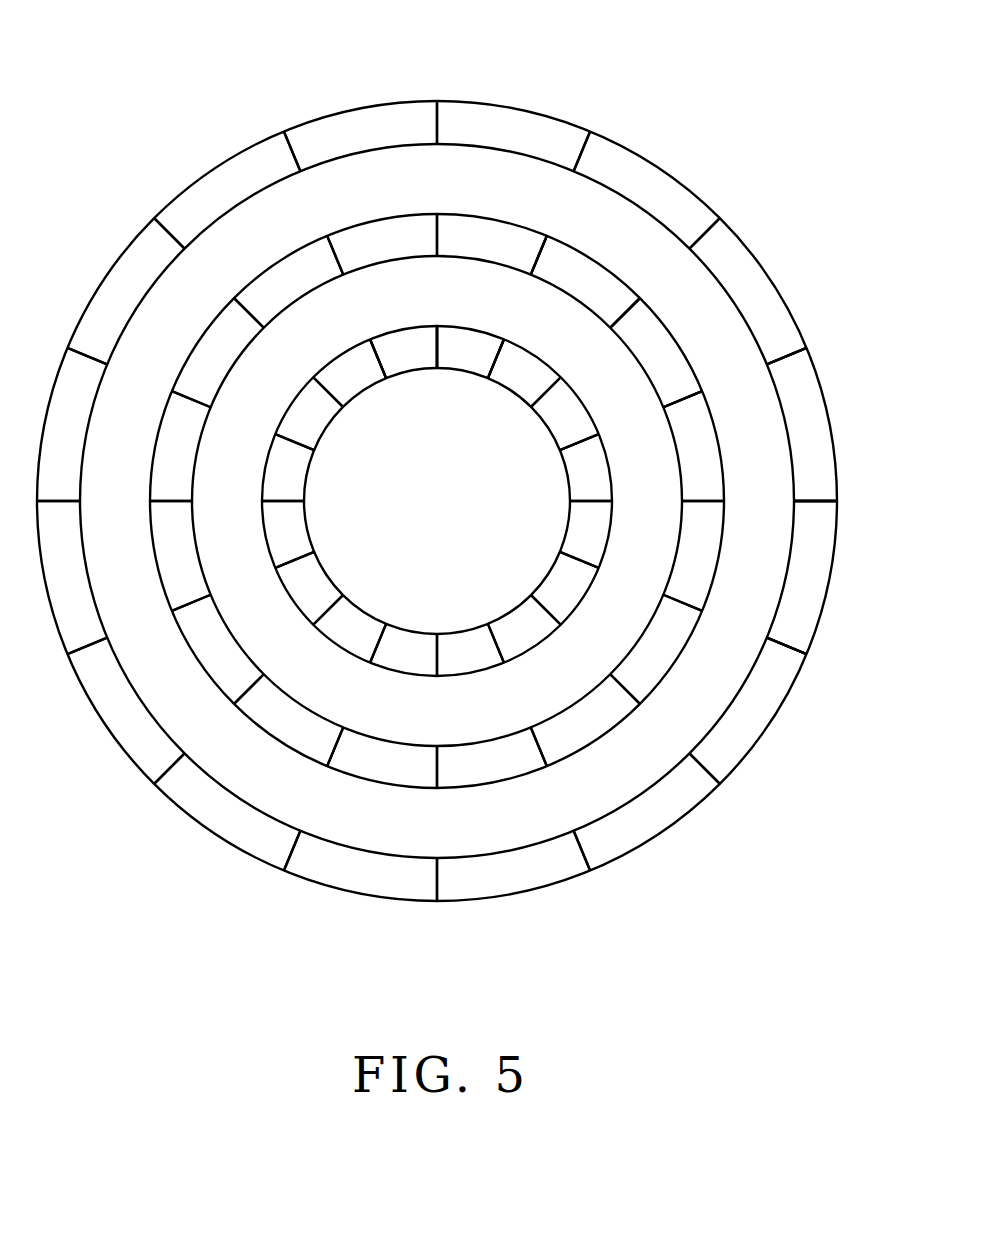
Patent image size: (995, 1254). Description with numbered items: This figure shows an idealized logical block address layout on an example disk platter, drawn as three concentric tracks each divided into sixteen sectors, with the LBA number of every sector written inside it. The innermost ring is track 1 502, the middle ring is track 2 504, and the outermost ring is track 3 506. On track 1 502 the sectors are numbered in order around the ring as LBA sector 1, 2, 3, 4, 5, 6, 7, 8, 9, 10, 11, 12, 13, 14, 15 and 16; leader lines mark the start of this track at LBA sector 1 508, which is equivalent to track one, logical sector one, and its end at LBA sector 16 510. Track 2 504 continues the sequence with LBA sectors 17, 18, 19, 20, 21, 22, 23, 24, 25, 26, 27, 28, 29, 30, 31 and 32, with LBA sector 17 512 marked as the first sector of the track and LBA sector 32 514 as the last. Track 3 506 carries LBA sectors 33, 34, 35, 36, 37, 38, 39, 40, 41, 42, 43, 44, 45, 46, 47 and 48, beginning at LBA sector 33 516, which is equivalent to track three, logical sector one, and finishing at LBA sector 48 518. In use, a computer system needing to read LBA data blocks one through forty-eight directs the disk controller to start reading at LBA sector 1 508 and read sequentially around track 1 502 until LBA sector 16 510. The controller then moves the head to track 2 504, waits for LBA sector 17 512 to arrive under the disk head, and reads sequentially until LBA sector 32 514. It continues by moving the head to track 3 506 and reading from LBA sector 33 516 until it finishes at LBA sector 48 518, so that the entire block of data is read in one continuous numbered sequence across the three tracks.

The LBA sector 1 is at (470, 352).
The LBA sector 2 is at (524, 373).
The LBA sector 3 is at (565, 413).
The LBA sector 4 is at (586, 467).
The LBA sector 5 is at (586, 534).
The LBA sector 6 is at (565, 588).
The LBA sector 7 is at (524, 629).
The LBA sector 8 is at (470, 650).
The LBA sector 9 is at (403, 650).
The LBA sector 10 is at (349, 629).
The LBA sector 11 is at (309, 588).
The LBA sector 12 is at (288, 534).
The LBA sector 13 is at (288, 467).
The LBA sector 14 is at (309, 413).
The LBA sector 15 is at (349, 373).
The LBA sector 16 is at (403, 352).
The LBA sector 17 is at (656, 352).
The LBA sector 18 is at (693, 446).
The LBA sector 19 is at (693, 556).
The LBA sector 20 is at (656, 649).
The LBA sector 21 is at (585, 720).
The LBA sector 22 is at (492, 757).
The LBA sector 23 is at (382, 757).
The LBA sector 24 is at (288, 720).
The LBA sector 25 is at (218, 649).
The LBA sector 26 is at (180, 556).
The LBA sector 27 is at (180, 446).
The LBA sector 28 is at (218, 352).
The LBA sector 29 is at (288, 282).
The LBA sector 30 is at (382, 244).
The LBA sector 31 is at (492, 244).
The LBA sector 32 is at (585, 282).
The LBA sector 33 is at (802, 577).
The LBA sector 34 is at (747, 711).
The LBA sector 35 is at (647, 811).
The LBA sector 36 is at (513, 866).
The LBA sector 37 is at (360, 866).
The LBA sector 38 is at (227, 811).
The LBA sector 39 is at (125, 711).
The LBA sector 40 is at (72, 577).
The LBA sector 41 is at (72, 424).
The LBA sector 42 is at (125, 291).
The LBA sector 43 is at (227, 189).
The LBA sector 44 is at (360, 136).
The LBA sector 45 is at (513, 136).
The LBA sector 46 is at (647, 189).
The LBA sector 47 is at (747, 291).
The LBA sector 48 is at (802, 424).
The track 1 502 is at (485, 673).
The track 2 504 is at (617, 728).
The track 3 506 is at (747, 757).
The LBA sector 1 508 is at (488, 343).
The LBA sector 16 510 is at (427, 343).
The LBA sector 17 512 is at (652, 323).
The LBA sector 32 514 is at (613, 295).
The LBA sector 33 516 is at (803, 627).
The LBA sector 48 518 is at (795, 395).